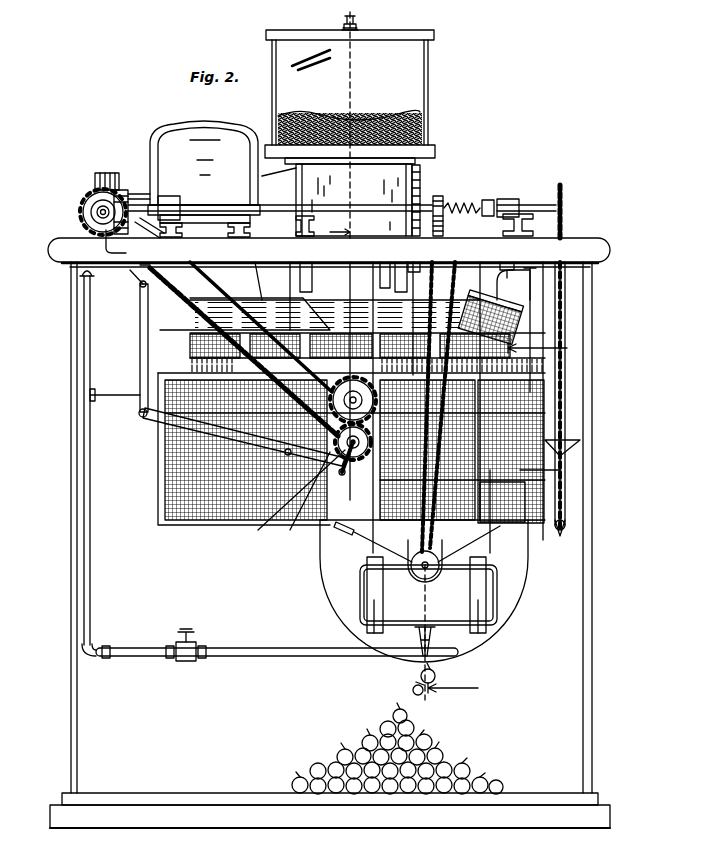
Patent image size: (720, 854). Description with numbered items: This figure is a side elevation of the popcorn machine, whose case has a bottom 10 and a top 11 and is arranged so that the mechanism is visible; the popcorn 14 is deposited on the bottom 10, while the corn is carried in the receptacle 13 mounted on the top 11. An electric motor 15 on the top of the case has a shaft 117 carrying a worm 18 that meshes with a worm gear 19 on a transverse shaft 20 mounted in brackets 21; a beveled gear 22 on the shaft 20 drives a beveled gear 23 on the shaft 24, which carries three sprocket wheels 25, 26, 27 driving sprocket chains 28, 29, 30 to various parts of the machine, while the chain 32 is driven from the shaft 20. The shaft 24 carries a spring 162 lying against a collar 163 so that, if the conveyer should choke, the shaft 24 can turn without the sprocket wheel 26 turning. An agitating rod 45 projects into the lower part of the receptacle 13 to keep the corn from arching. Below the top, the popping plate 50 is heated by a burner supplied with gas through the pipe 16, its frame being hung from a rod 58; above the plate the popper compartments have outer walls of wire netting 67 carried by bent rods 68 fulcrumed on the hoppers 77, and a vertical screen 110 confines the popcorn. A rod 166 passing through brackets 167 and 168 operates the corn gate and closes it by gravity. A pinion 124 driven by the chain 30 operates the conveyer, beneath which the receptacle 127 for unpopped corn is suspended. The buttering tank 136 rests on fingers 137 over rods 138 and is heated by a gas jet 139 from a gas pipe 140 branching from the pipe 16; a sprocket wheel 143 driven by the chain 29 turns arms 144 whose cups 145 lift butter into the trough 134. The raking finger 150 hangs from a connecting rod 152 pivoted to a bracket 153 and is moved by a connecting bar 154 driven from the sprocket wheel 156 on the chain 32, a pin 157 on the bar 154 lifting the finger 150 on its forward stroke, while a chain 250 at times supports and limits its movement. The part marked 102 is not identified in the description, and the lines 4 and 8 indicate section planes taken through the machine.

The section line 4— 4 is at (300, 14).
The section line 8— 8 is at (504, 518).
The bottom 10 is at (500, 800).
The top 11 is at (580, 256).
The corn receptacle 13 is at (414, 90).
The popcorn 14 is at (348, 123).
The electric motor 15 is at (204, 179).
The gas pipe 16 is at (117, 398).
The worm 18 is at (106, 173).
The worm gear 19 is at (91, 200).
The transverse shaft 20 is at (82, 212).
The brackets 21 is at (296, 230).
The beveled gear 22 is at (125, 242).
The beveled gear 23 is at (146, 228).
The shaft 24 is at (228, 205).
The sprocket wheel 25 is at (413, 255).
The sprocket wheel 26 is at (444, 198).
The sprocket wheel 27 is at (560, 188).
The sprocket chain 28 is at (418, 166).
The sprocket chain 29 is at (418, 407).
The sprocket chain 30 is at (565, 416).
The sprocket chain 32 is at (212, 298).
The agitating arm or rod 45 is at (313, 203).
The popping plate 50 is at (195, 364).
The rod 58 is at (351, 407).
The wire netting 67 is at (192, 343).
The rods 68 is at (596, 279).
The hopper 77 is at (284, 312).
The gear 102 is at (372, 367).
The vertical screen 110 is at (200, 500).
The motor shaft 117 is at (122, 180).
The pinion 124 is at (560, 538).
The receptacle 127 is at (340, 600).
The trough 134 is at (491, 525).
The buttering tank 136 is at (498, 606).
The fingers 137 is at (385, 618).
The rods 138 is at (511, 431).
The gas jet 139 is at (440, 652).
The gas pipe 140 is at (287, 657).
The sprocket wheel 143 is at (431, 580).
The radially extending arms 144 is at (367, 557).
The cups 145 is at (353, 536).
The finger 150 is at (566, 476).
The connecting rod 152 is at (140, 360).
The bracket 153 is at (140, 288).
The connecting bar 154 is at (180, 470).
The sprocket wheel 156 is at (304, 530).
The pin 157 is at (260, 530).
The spring 162 is at (462, 218).
The collar 163 is at (503, 199).
The rod 166 is at (533, 323).
The bracket 167 is at (519, 260).
The bracket 168 is at (392, 210).
The chain 250 is at (490, 316).